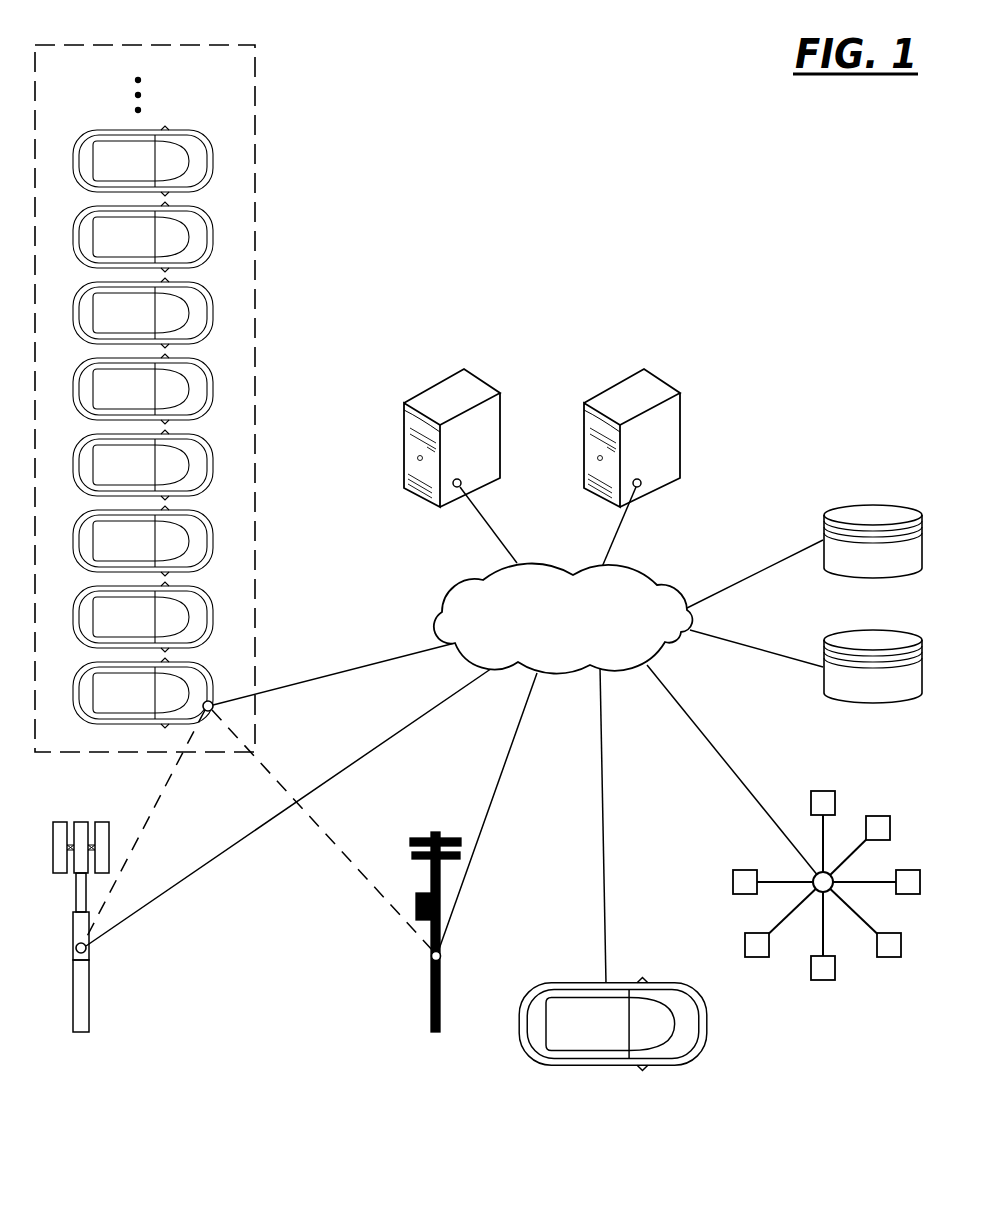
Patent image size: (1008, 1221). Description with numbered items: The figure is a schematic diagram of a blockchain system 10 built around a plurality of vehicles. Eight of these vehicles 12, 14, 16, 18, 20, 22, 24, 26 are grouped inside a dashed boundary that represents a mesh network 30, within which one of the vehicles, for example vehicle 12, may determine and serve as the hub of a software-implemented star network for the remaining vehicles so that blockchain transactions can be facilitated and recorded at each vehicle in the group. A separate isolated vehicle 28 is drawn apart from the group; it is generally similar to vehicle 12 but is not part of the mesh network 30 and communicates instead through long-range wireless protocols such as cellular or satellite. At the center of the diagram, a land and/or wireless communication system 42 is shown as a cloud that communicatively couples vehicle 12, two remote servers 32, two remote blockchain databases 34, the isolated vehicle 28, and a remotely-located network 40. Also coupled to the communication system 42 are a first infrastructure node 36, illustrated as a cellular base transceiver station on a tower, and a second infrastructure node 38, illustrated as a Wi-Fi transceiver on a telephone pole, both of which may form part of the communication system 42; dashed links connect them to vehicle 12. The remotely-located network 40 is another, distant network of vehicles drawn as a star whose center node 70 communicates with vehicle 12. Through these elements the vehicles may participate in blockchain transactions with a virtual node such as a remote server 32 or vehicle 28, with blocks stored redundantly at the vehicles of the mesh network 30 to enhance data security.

The blockchain system 10 is at (760, 182).
The vehicle 12 is at (119, 704).
The vehicle 14 is at (119, 627).
The vehicle 16 is at (119, 551).
The vehicle 18 is at (119, 475).
The vehicle 20 is at (119, 399).
The vehicle 22 is at (119, 323).
The vehicle 24 is at (119, 247).
The vehicle 26 is at (119, 171).
The isolated vehicle 28 is at (574, 1034).
The mesh network 30 is at (259, 235).
The remote server 32 is at (402, 452).
The remote blockchain database 34 is at (822, 528).
The first infrastructure node 36 is at (70, 946).
The second infrastructure node 38 is at (425, 952).
The remotely-located network 40 is at (737, 832).
The land and/or wireless communication system 42 is at (552, 632).
The center node 70 is at (812, 886).